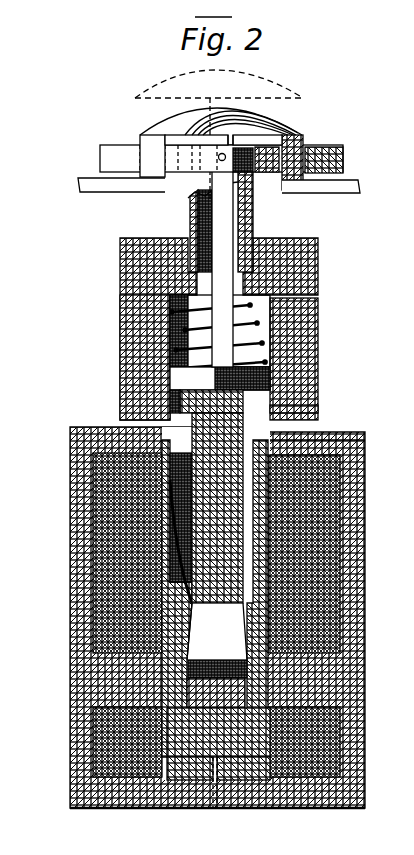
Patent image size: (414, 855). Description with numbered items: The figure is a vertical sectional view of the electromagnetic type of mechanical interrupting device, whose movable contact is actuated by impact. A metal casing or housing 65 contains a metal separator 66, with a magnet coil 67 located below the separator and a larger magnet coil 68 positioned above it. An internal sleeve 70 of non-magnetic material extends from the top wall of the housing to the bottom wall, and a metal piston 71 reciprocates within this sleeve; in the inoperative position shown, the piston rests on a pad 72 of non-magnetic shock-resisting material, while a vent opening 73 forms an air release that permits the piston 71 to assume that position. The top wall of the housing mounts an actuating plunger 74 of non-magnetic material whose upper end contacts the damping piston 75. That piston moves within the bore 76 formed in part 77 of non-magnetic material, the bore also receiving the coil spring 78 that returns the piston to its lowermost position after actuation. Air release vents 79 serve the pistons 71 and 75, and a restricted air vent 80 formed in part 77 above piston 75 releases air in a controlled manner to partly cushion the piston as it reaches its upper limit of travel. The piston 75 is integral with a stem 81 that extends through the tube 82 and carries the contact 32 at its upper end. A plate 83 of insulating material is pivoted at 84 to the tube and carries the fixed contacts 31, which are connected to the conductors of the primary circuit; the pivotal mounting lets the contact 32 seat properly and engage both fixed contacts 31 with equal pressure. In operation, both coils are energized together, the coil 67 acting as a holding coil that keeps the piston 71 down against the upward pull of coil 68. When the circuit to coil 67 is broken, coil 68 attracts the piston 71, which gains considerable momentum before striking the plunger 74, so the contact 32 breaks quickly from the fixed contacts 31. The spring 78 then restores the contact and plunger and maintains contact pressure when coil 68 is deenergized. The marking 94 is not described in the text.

The fixed contacts 31 is at (142, 140).
The contact 32 is at (280, 122).
The plate 83 is at (343, 163).
The pivot 84 is at (218, 154).
The stem 81 is at (233, 213).
The tube 82 is at (190, 213).
The restricted air vent 80 is at (318, 275).
The part 77 is at (120, 337).
The coil spring 78 is at (247, 340).
The bore 76 is at (172, 313).
The damping piston 75 is at (268, 376).
The air release vents 79 is at (320, 410).
The actuating plunger 74 is at (200, 457).
The casing or housing 65 is at (366, 578).
The metal separator 66 is at (298, 682).
The magnet coil 68 is at (340, 485).
The magnet coil 67 is at (340, 737).
The internal sleeve 70 is at (160, 678).
The metal piston 71 is at (185, 737).
The pad 72 is at (187, 783).
The vent opening 73 is at (217, 798).
The sheet number 94 is at (393, 839).